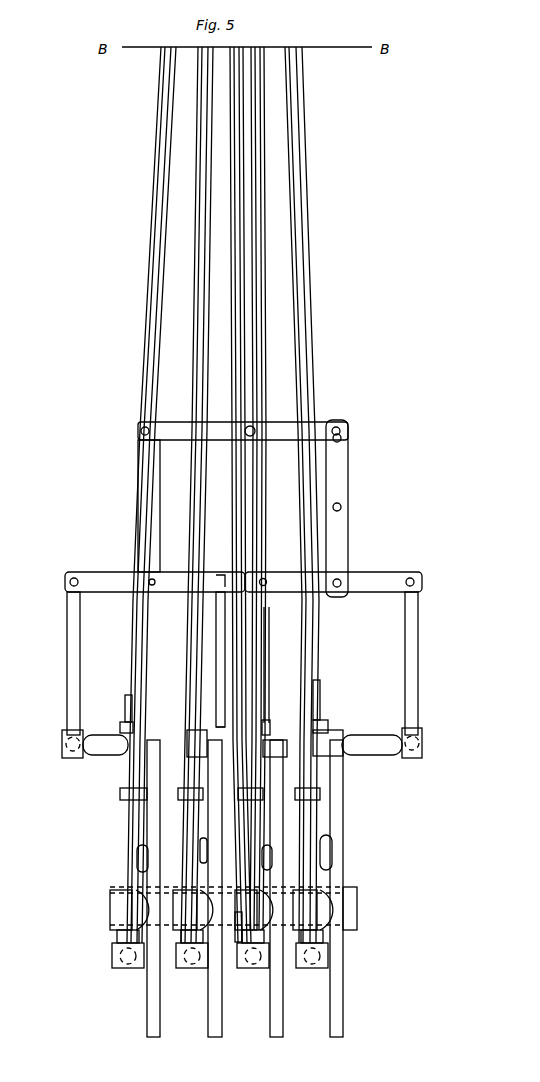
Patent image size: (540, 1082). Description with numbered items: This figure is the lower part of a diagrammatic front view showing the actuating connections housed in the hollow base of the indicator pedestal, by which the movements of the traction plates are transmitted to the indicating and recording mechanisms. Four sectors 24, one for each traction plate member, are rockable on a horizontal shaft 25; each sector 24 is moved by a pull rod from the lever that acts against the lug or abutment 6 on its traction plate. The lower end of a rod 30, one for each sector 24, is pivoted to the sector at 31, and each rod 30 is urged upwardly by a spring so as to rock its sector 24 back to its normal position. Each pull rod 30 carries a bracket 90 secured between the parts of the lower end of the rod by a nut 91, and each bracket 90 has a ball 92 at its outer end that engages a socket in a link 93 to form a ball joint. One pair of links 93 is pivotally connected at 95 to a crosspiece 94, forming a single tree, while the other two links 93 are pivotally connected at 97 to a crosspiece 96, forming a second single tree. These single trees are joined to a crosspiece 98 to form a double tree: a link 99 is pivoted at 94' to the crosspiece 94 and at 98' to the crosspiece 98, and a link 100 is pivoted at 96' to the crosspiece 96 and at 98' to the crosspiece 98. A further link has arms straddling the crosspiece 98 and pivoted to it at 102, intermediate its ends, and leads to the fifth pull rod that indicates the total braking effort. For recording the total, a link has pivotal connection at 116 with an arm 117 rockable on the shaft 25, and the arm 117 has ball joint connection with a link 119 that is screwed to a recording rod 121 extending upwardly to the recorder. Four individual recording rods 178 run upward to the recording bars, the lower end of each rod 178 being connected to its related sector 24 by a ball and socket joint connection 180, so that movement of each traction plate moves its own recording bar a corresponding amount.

The lug or abutment 6 is at (220, 650).
The sector 24 is at (155, 735).
The horizontal shaft 25 is at (362, 900).
The rod 30 is at (127, 696).
The pivot 31 is at (130, 853).
The bracket 90 is at (108, 748).
The nut 91 is at (127, 727).
The ball 92 is at (62, 743).
The link 93 is at (72, 610).
The crosspiece 94 is at (333, 568).
The pivot 94' is at (346, 603).
The pivot 95 is at (418, 575).
The crosspiece 96 is at (155, 564).
The pivot 96' is at (129, 600).
The pivot 97 is at (66, 580).
The crosspiece 98 is at (228, 408).
The pivot 98' is at (247, 422).
The link 99 is at (342, 473).
The link 100 is at (138, 495).
The pivot 102 is at (252, 425).
The pivotal connection 116 is at (117, 887).
The arm 117 is at (242, 942).
The link 119 is at (187, 830).
The recording rod 121 is at (238, 258).
The recording rod 178 is at (203, 183).
The ball and socket joint connection 180 is at (125, 968).